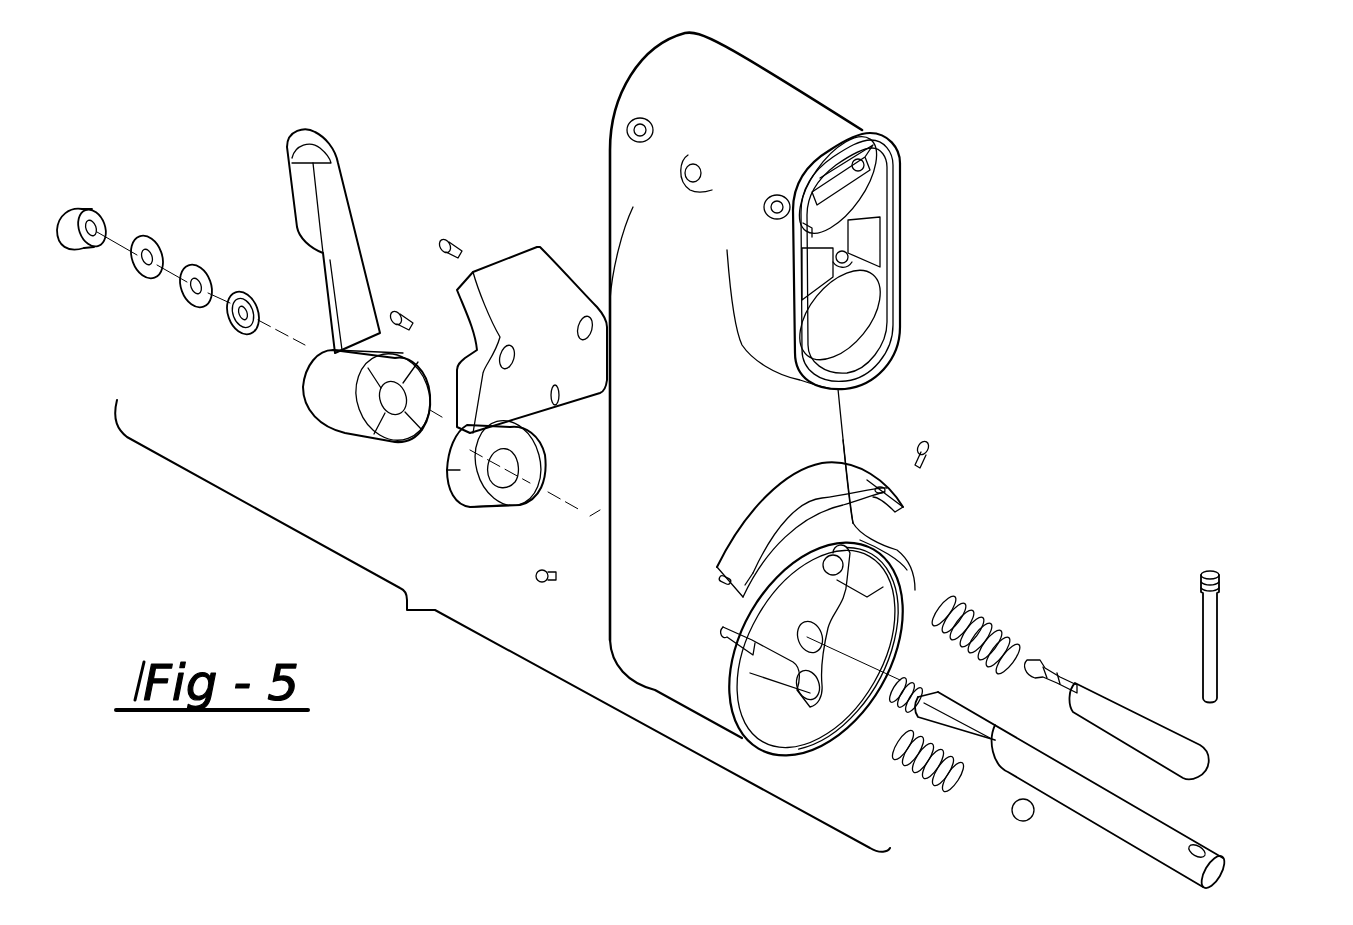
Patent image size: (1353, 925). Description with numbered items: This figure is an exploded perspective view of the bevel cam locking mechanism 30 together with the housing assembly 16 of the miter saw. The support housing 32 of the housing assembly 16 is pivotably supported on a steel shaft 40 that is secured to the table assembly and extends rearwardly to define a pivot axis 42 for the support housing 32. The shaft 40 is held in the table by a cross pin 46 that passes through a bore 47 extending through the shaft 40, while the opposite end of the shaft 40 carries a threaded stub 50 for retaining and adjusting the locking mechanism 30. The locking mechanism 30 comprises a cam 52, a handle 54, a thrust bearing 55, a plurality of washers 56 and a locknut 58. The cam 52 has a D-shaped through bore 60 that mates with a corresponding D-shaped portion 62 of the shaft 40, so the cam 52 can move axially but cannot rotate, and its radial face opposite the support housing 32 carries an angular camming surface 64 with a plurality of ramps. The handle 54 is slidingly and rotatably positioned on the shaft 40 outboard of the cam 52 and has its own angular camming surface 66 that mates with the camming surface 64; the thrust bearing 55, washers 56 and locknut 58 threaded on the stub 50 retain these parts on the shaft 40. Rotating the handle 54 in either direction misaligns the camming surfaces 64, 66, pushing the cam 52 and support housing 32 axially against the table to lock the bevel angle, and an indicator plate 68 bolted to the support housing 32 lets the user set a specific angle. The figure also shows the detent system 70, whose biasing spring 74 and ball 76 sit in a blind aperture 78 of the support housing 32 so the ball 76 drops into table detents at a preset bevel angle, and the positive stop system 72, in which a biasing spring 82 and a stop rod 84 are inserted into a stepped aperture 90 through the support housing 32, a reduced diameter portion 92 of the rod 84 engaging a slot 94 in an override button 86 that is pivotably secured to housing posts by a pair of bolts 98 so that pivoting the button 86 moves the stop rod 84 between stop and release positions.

The housing assembly 16 is at (905, 113).
The locking mechanism 30 is at (260, 200).
The support housing 32 is at (850, 386).
The shaft 40 is at (1140, 830).
The pivot axis 42 is at (572, 525).
The cross pin 46 is at (1213, 648).
The bore 47 is at (1200, 847).
The threaded stub 50 is at (915, 640).
The cam 52 is at (460, 470).
The handle 54 is at (340, 198).
The thrust bearing 55 is at (232, 327).
The washers 56 is at (178, 293).
The locknut 58 is at (83, 203).
The D-shaped through bore 60 is at (497, 493).
The D-shaped portion 62 is at (972, 737).
The angular camming surface 64 is at (443, 440).
The angular camming surface 66 is at (368, 425).
The indicator plate 68 is at (837, 474).
The detent system 70 is at (963, 798).
The positive stop system 72 is at (1097, 602).
The biasing spring 74 is at (897, 747).
The ball 76 is at (1023, 813).
The blind aperture 78 is at (822, 712).
The biasing spring 82 is at (977, 603).
The stop rod 84 is at (1183, 747).
The override button 86 is at (530, 263).
The stepped aperture 90 is at (877, 557).
The reduced diameter portion 92 is at (1050, 673).
The slot 94 is at (555, 405).
The bolts 98 is at (442, 243).